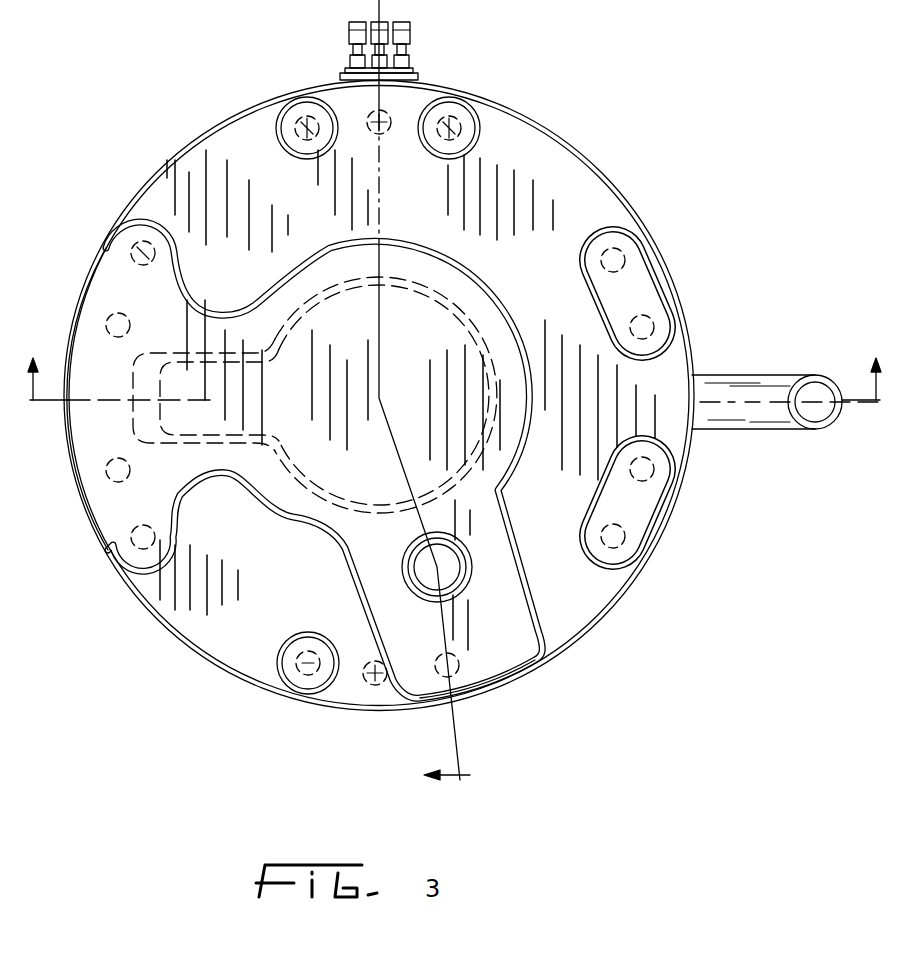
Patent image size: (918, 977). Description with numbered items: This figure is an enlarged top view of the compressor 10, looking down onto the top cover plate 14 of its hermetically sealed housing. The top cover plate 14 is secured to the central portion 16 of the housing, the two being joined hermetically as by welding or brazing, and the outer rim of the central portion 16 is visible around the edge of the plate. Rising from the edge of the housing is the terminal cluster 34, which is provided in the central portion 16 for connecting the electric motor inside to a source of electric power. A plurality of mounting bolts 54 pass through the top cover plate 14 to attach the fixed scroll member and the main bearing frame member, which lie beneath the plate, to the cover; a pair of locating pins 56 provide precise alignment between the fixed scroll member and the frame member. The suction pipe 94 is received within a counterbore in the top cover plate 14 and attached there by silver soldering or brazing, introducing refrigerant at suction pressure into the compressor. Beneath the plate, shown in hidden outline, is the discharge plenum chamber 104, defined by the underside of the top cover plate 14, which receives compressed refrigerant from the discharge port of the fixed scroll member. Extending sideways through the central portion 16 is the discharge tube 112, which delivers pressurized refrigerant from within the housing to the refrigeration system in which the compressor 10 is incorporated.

The compressor 10 is at (652, 160).
The top cover plate 14 is at (203, 173).
The central portion 16 is at (143, 607).
The terminal cluster 34 is at (407, 60).
The mounting bolts 54 is at (137, 254).
The locating pins 56 is at (385, 130).
The suction pipe 94 is at (465, 585).
The discharge plenum chamber 104 is at (445, 300).
The discharge tube 112 is at (722, 388).